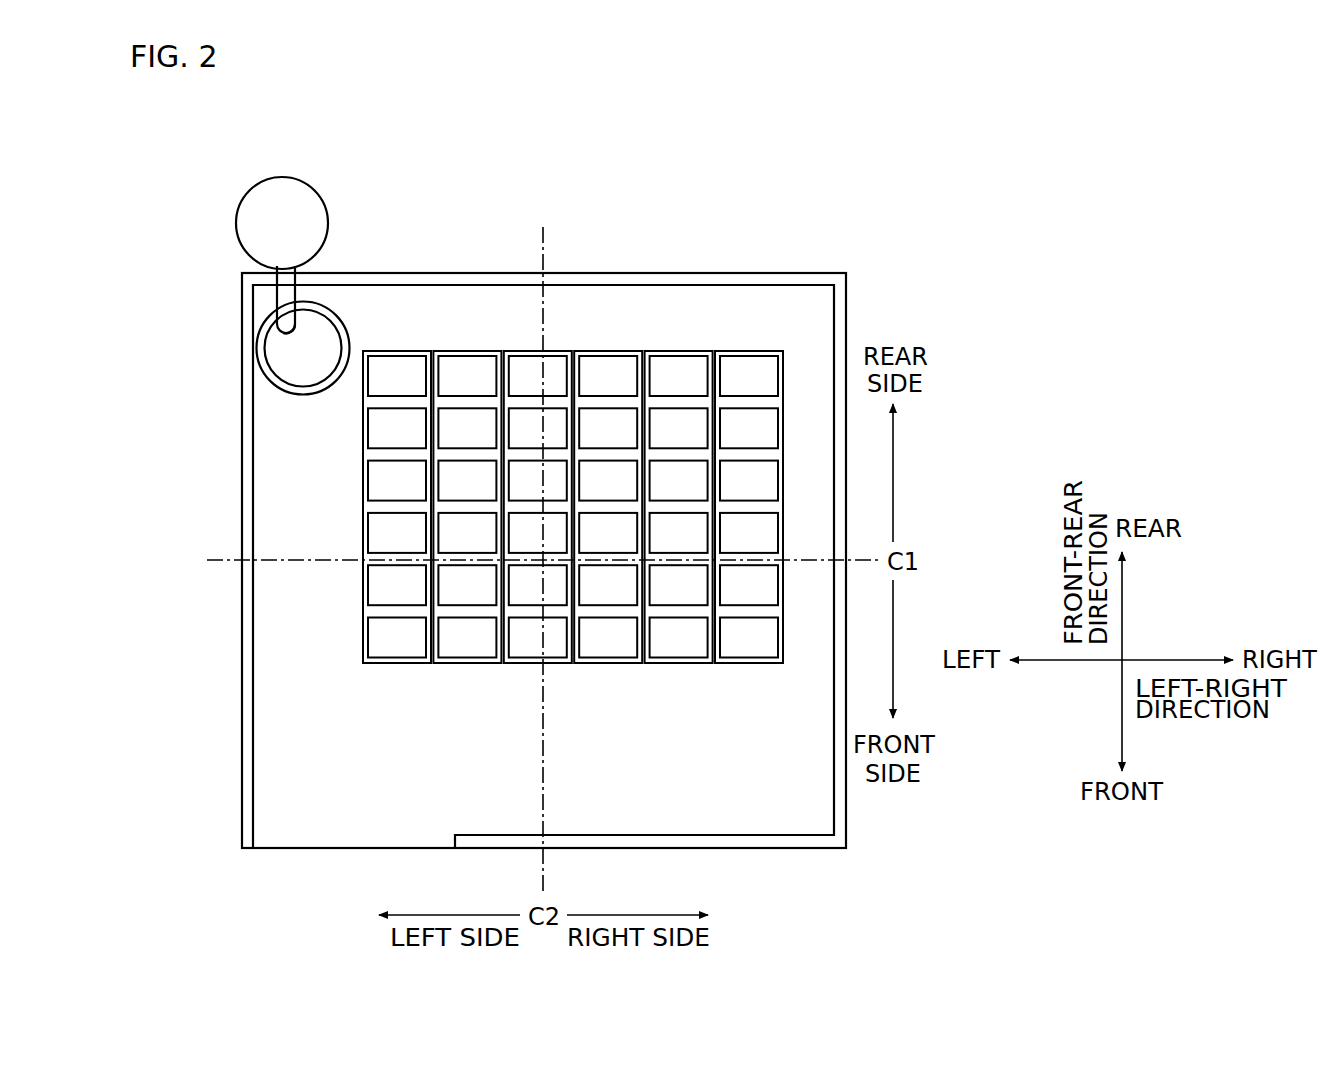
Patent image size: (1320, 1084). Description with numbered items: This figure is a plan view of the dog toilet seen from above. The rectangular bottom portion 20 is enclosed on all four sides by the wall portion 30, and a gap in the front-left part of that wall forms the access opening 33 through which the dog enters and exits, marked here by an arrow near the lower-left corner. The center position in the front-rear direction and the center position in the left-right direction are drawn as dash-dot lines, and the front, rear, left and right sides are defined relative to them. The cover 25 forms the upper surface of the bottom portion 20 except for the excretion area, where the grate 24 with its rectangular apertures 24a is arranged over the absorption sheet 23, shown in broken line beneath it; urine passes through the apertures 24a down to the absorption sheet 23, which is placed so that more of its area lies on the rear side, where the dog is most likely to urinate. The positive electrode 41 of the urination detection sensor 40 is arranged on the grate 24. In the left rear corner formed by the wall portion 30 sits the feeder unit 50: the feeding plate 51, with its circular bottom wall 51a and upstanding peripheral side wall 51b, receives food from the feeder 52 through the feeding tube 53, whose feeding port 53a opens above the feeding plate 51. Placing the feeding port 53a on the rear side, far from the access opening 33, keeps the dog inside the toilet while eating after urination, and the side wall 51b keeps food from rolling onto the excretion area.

The bottom portion 20 is at (543, 624).
The absorption sheet 23 is at (608, 368).
The grate 24 is at (683, 410).
The apertures 24a is at (680, 378).
The cover 25 is at (337, 797).
The wall portion 30 is at (547, 618).
The access opening 33 is at (288, 833).
The urination detection sensor 40 is at (573, 410).
The positive electrode 41 is at (573, 410).
The feeder unit 50 is at (257, 292).
The feeding plate 51 is at (243, 355).
The bottom wall 51a is at (265, 350).
The peripheral side wall 51b is at (268, 372).
The feeder 52 is at (236, 223).
The feeding tube 53 is at (282, 268).
The feeding port 53a is at (298, 333).